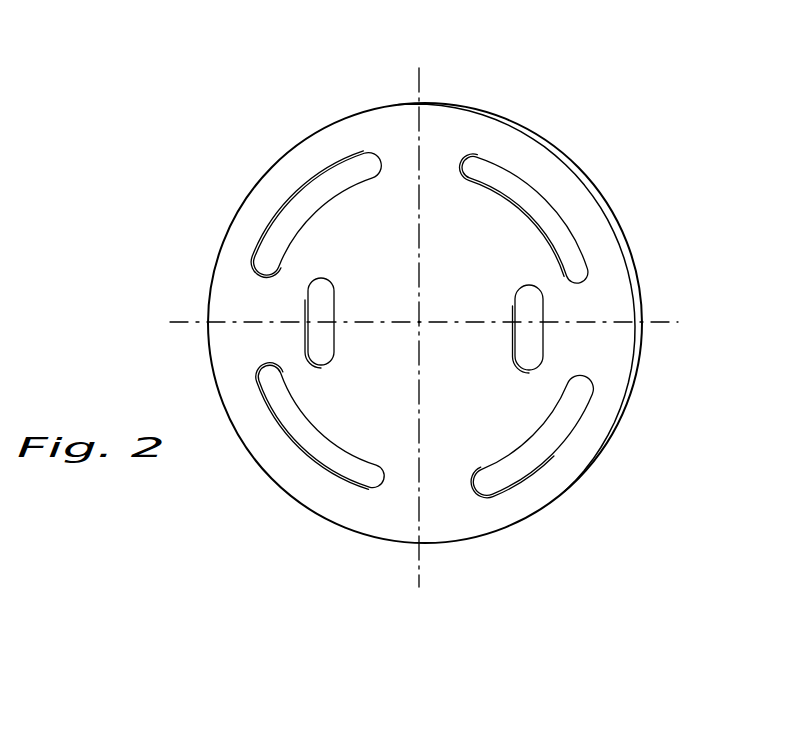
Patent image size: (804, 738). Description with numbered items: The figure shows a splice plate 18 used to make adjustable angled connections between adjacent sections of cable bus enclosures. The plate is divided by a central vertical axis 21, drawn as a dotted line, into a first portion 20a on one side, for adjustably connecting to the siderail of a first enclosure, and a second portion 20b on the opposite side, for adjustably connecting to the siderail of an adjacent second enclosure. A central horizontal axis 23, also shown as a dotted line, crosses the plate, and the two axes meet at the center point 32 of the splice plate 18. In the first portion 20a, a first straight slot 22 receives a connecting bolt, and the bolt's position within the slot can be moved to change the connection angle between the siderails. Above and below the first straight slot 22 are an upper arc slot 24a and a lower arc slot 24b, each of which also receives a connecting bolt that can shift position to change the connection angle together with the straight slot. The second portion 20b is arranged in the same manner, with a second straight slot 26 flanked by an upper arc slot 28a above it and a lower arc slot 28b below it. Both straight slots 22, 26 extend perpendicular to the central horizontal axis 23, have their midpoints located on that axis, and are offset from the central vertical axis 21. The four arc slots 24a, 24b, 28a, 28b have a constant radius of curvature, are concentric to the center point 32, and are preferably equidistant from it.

The splice plate 18 is at (617, 360).
The first portion 20a is at (588, 221).
The second portion 20b is at (239, 287).
The central vertical axis 21 is at (420, 88).
The first straight slot 22 is at (530, 310).
The central horizontal axis 23 is at (180, 318).
The upper arc slot 24a is at (492, 172).
The lower arc slot 24b is at (560, 427).
The second straight slot 26 is at (320, 345).
The upper arc slot 28a is at (300, 205).
The lower arc slot 28b is at (288, 408).
The center point 32 is at (418, 325).